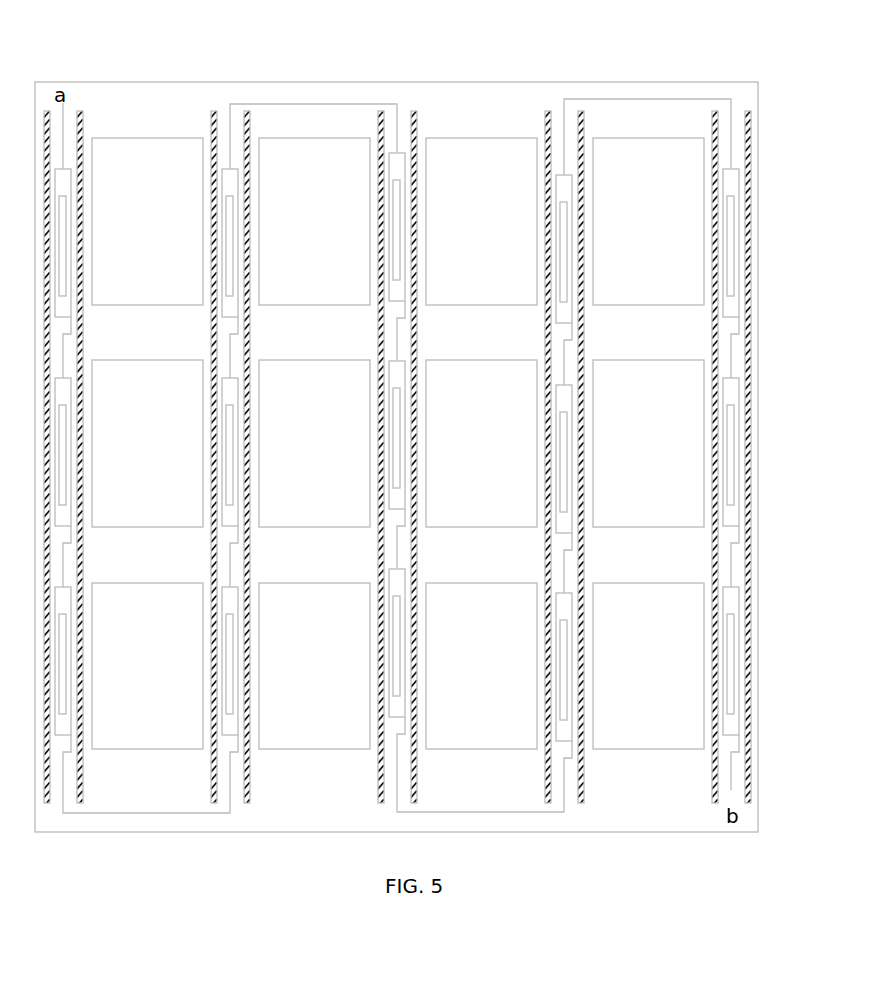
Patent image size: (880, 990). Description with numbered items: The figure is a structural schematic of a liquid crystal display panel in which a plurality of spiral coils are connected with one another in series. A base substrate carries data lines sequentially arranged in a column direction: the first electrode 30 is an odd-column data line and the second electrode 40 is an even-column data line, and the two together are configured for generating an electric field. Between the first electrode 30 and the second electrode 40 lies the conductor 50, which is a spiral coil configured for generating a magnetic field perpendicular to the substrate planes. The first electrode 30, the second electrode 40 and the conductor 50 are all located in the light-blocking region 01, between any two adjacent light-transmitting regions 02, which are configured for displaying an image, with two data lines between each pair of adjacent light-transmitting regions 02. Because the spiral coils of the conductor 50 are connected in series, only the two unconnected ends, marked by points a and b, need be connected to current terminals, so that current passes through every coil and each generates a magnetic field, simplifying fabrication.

The first electrode 30 is at (213, 111).
The second electrode 40 is at (247, 111).
The conductor 50 is at (223, 169).
The light-blocking region 01 is at (315, 123).
The light-transmitting region 02 is at (452, 178).